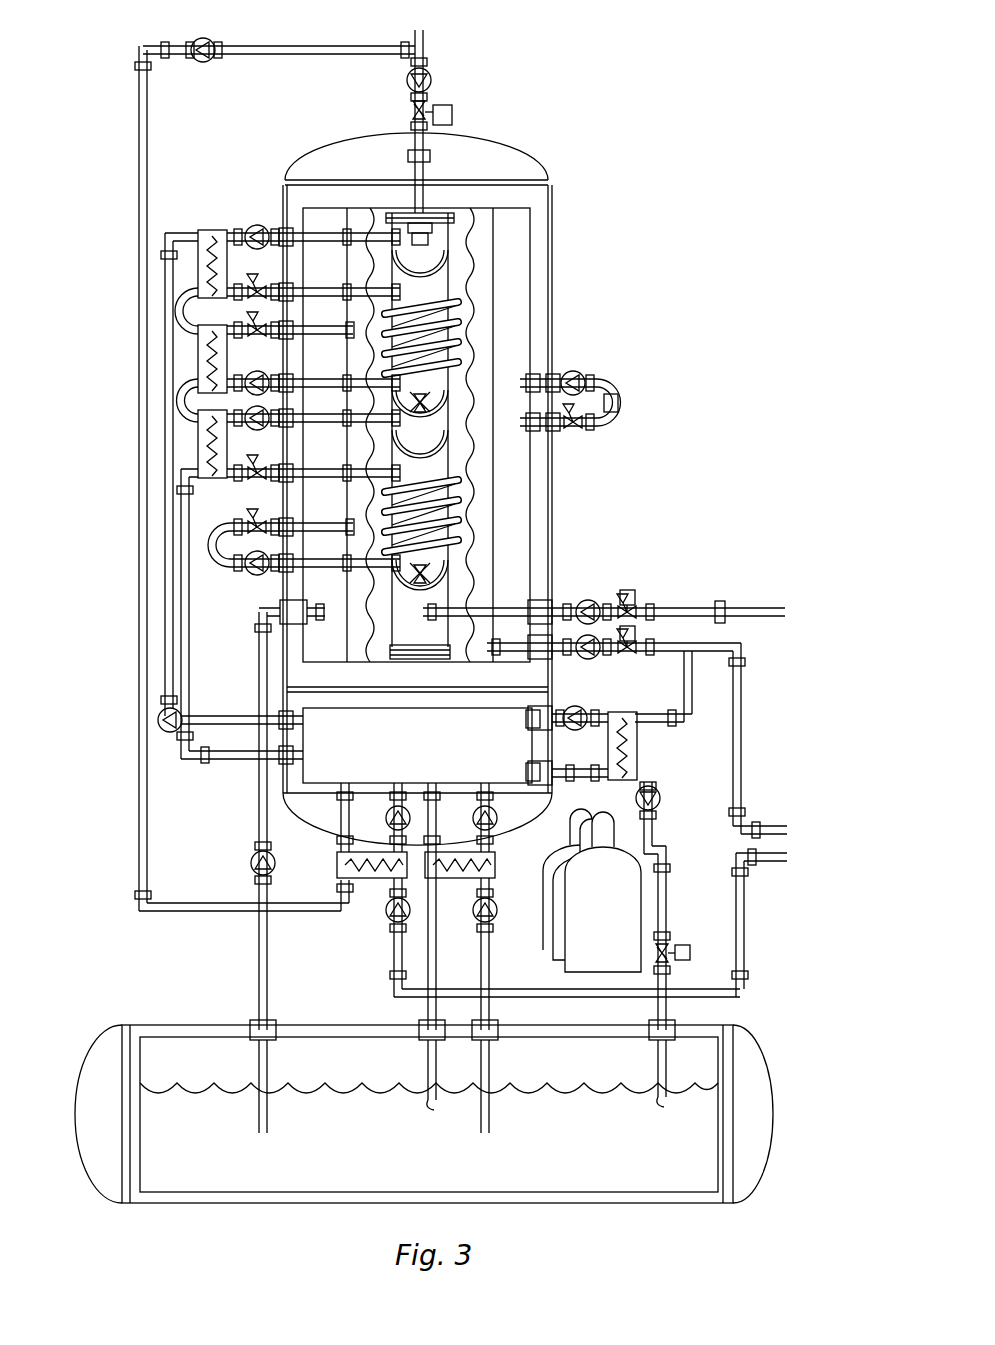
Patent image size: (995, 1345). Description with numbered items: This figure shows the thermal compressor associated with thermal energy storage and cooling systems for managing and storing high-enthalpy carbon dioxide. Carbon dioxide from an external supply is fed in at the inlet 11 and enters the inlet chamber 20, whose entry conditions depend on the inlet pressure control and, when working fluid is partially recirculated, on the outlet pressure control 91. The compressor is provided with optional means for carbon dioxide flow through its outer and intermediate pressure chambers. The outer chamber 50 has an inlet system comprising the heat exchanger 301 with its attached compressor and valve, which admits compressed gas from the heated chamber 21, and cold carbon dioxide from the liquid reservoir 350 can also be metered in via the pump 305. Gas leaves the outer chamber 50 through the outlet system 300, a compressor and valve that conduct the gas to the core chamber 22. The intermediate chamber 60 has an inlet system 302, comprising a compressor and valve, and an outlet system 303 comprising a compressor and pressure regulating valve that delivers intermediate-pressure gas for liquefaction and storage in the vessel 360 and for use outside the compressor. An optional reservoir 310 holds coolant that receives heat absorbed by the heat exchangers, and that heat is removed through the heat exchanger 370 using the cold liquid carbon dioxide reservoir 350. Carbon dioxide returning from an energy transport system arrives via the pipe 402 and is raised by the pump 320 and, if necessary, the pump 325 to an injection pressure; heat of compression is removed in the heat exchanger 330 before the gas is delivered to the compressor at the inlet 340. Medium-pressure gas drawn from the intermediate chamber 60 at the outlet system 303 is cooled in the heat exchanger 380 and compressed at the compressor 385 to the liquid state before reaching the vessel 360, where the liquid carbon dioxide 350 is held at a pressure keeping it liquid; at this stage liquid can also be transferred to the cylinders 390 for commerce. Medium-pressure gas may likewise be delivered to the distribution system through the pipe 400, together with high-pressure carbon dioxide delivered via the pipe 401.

The inlet 11 is at (426, 50).
The inlet chamber 20 is at (430, 260).
The heated chamber 21 is at (418, 297).
The core chamber 22 is at (415, 430).
The outer chamber 50 is at (512, 260).
The intermediate chamber 60 is at (477, 313).
The outlet pressure control 91 is at (633, 590).
The outlet system 300 is at (613, 394).
The heat exchanger 301 is at (196, 358).
The inlet system 302 is at (237, 576).
The outlet system 303 is at (615, 660).
The pump 305 is at (251, 864).
The reservoir 310 is at (304, 776).
The pump 320 is at (386, 926).
The pump 325 is at (191, 42).
The heat exchanger 330 is at (377, 884).
The inlet 340 is at (292, 64).
The liquid carbon dioxide reservoir 350 is at (429, 1117).
The vessel 360 is at (201, 1023).
The heat exchanger 370 is at (489, 882).
The heat exchanger 380 is at (641, 745).
The compressor 385 is at (661, 806).
The cylinders 390 is at (592, 890).
The pipe 400 is at (787, 830).
The pipe 401 is at (786, 611).
The pipe 402 is at (785, 861).